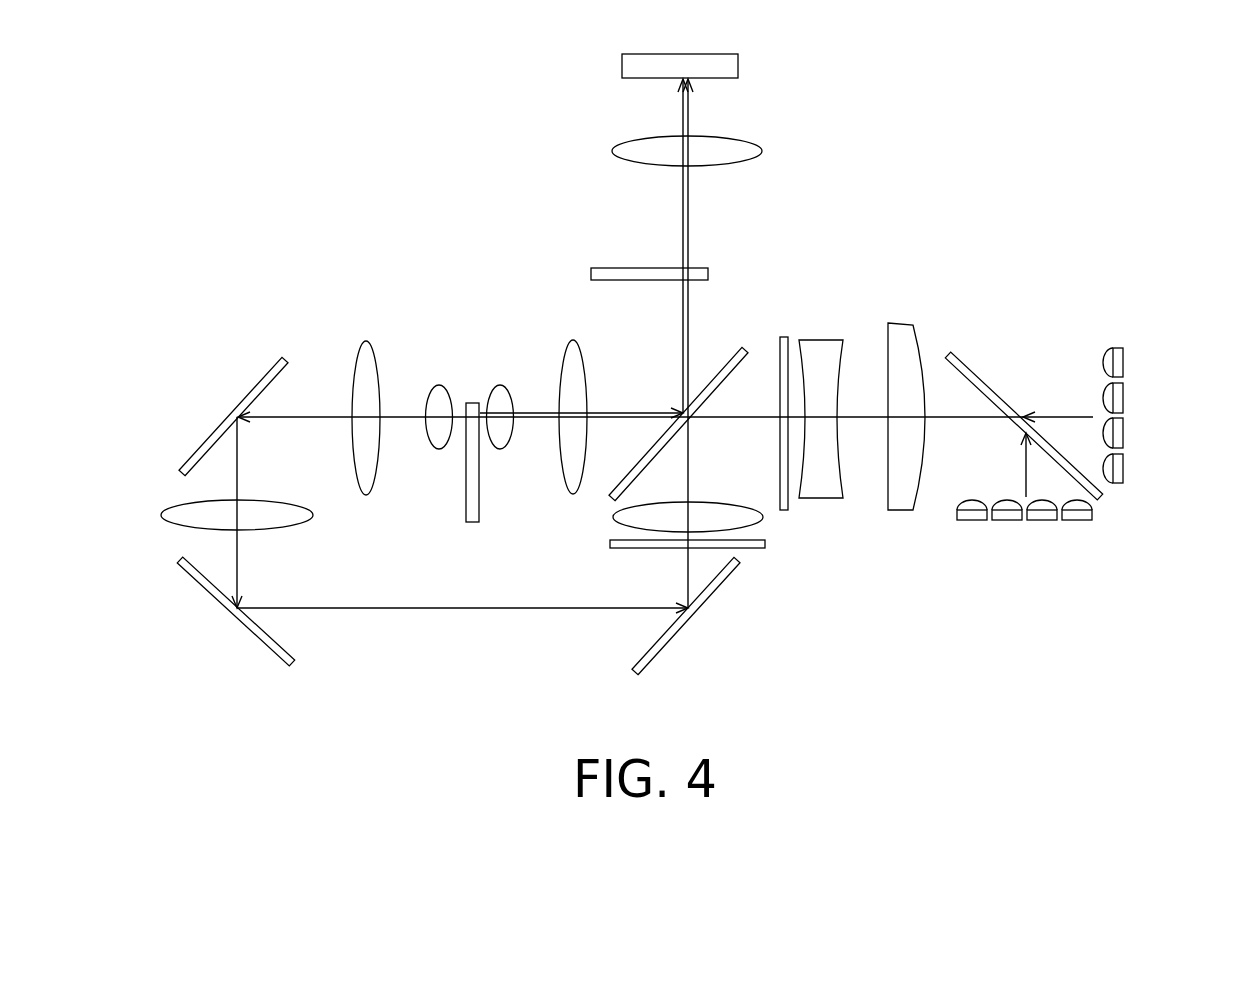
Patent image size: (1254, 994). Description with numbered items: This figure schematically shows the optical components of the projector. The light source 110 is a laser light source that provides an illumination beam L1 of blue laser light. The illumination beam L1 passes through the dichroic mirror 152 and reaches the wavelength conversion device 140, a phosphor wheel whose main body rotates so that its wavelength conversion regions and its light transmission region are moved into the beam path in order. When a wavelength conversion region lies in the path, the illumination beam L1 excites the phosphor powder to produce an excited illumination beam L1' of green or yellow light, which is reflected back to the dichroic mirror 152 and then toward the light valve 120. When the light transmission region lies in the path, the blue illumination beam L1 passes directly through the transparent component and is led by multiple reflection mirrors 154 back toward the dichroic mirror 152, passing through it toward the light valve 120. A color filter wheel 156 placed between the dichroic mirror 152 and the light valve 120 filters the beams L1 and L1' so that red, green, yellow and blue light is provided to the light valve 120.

The light source 110 is at (1141, 421).
The light valve 120 is at (738, 66).
The wavelength conversion device 140 is at (473, 400).
The dichroic mirror 152 is at (721, 350).
The reflection mirrors 154 is at (263, 378).
The color filter wheel 156 is at (622, 262).
The illumination beam L1 is at (1015, 391).
The excited illumination beam L1' is at (631, 362).